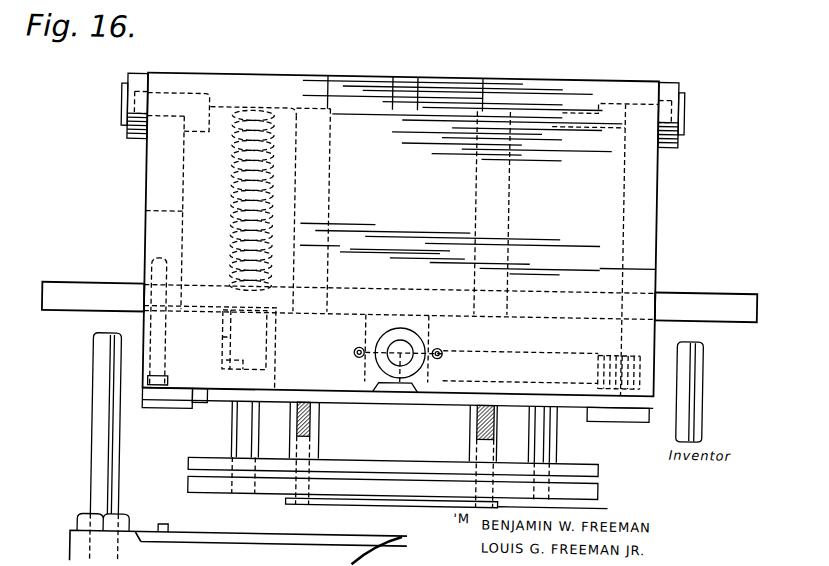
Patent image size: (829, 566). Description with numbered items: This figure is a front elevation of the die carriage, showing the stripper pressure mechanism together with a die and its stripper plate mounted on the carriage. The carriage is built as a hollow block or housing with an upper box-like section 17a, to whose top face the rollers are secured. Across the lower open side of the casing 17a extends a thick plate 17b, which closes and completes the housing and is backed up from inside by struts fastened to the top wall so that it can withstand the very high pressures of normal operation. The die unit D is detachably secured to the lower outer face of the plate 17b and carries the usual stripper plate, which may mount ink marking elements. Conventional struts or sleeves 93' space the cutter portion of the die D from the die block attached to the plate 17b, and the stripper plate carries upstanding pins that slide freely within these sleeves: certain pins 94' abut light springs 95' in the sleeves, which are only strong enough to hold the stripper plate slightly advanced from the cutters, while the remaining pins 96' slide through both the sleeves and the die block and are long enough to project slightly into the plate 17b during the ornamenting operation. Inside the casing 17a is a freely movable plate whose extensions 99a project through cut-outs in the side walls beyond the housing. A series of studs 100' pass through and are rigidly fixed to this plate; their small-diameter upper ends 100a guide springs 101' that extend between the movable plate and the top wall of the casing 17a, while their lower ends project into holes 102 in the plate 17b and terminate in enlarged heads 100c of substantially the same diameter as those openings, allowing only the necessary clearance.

The upper box-like section 17a is at (607, 196).
The thick plate 17b is at (642, 328).
The extensions 99a is at (78, 306).
The studs 100' is at (228, 200).
The stud ends 100a is at (252, 351).
The heads 100c is at (270, 375).
The springs 101' is at (237, 202).
The holes 102 is at (278, 344).
The struts or sleeves 93' is at (443, 455).
The springs 95' is at (464, 456).
The die unit D is at (397, 462).
The pins 94' is at (393, 490).
The pins 96' is at (380, 493).